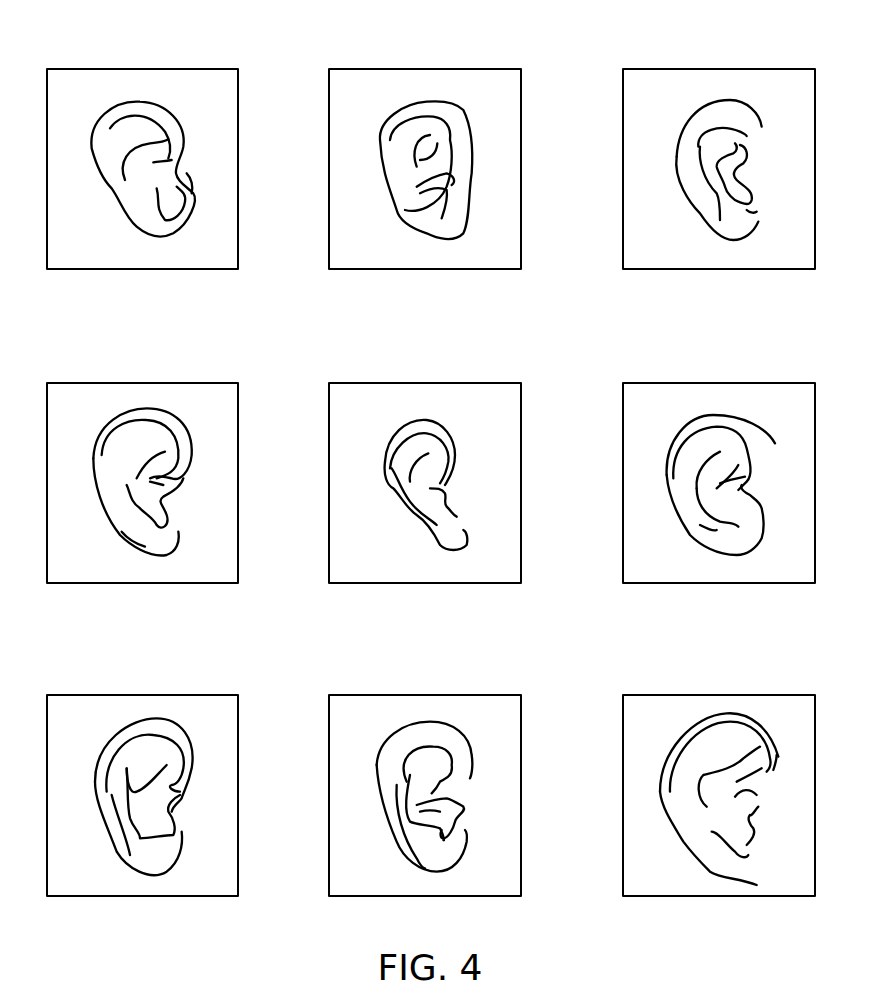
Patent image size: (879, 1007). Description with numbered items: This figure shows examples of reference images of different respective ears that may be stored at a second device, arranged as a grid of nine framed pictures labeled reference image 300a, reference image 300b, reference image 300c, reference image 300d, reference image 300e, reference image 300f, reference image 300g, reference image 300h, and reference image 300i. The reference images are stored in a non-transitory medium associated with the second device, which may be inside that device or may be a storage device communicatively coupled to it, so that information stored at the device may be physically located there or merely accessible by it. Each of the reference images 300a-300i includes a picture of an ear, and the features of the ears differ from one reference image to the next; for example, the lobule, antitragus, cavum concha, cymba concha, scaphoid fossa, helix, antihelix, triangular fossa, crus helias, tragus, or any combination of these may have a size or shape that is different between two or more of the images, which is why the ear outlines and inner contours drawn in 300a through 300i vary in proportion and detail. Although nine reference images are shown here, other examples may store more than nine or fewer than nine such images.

The reference image 300a is at (147, 69).
The reference image 300b is at (437, 69).
The reference image 300c is at (725, 69).
The reference image 300d is at (138, 383).
The reference image 300e is at (426, 383).
The reference image 300f is at (725, 383).
The reference image 300g is at (138, 695).
The reference image 300h is at (426, 695).
The reference image 300i is at (725, 695).